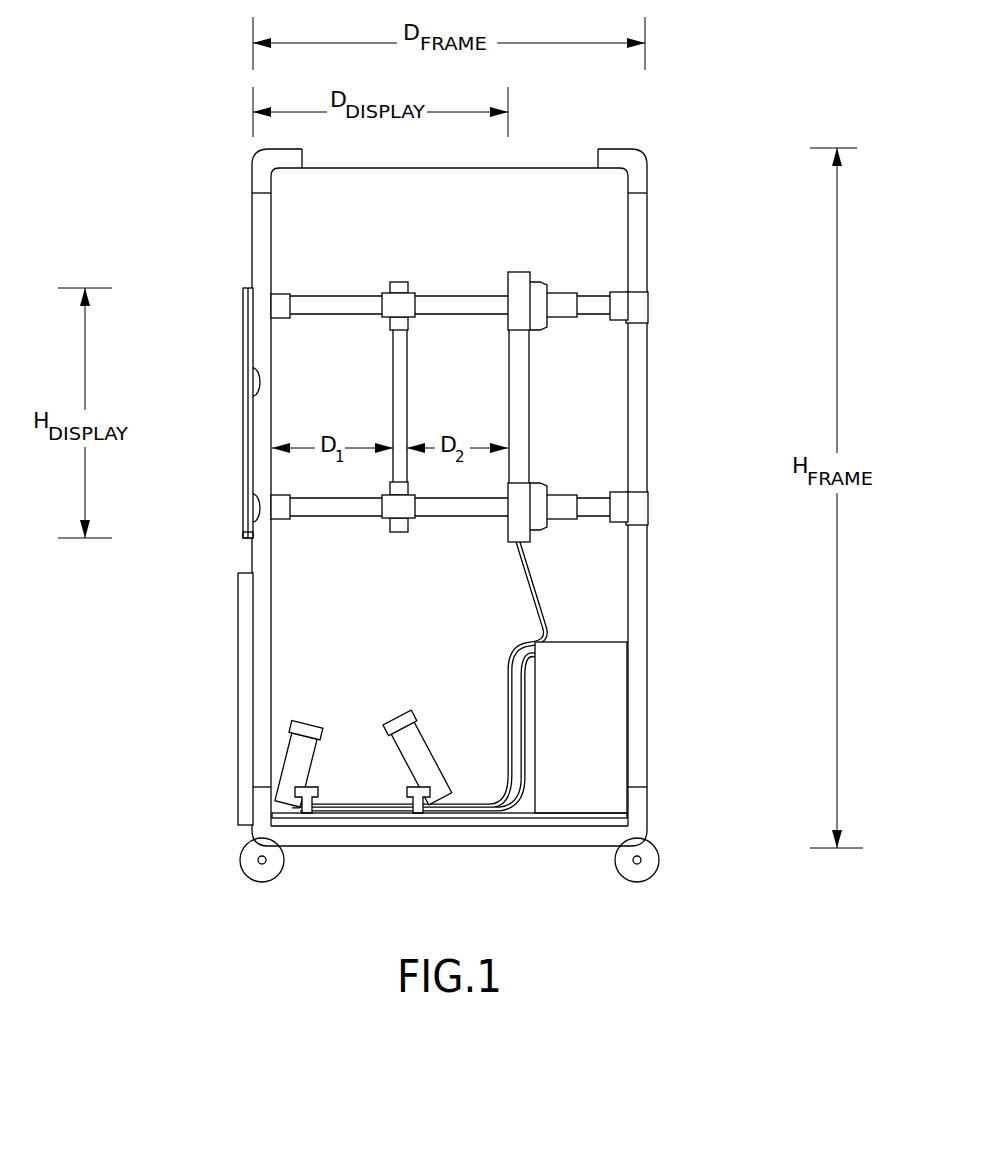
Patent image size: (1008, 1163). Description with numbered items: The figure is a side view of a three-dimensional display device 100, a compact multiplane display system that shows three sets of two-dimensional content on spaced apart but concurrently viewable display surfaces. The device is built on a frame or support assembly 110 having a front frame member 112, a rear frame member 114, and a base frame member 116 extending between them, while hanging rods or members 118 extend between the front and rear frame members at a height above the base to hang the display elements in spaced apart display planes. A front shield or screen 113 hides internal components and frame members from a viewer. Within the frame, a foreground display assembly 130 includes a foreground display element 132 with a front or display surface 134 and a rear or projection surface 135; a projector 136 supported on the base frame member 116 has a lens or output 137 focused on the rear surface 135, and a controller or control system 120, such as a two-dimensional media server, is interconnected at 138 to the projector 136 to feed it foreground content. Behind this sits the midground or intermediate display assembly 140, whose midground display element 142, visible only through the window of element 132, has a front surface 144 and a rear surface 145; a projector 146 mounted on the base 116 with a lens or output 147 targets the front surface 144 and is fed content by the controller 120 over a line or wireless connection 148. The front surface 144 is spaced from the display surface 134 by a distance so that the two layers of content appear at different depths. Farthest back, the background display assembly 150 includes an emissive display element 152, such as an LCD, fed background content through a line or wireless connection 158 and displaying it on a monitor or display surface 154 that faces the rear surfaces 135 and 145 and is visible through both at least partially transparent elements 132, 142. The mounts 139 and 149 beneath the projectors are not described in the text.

The 3D display device 100 is at (705, 107).
The frame or support assembly 110 is at (538, 150).
The front frame member 112 is at (252, 240).
The front shield or screen 113 is at (240, 770).
The rear frame member 114 is at (637, 237).
The base frame member 116 is at (583, 837).
The hanging rods or members 118 is at (592, 318).
The controller or control system 120 is at (585, 642).
The foreground display assembly 130 is at (237, 280).
The foreground display element 132 is at (250, 540).
The front or display surface 134 is at (247, 472).
The rear or projection surface 135 is at (250, 370).
The projector 136 is at (425, 732).
The lens or output 137 is at (403, 710).
The interconnection 138 is at (483, 800).
The second speaker mount 139 is at (407, 793).
The midground or intermediate display assembly 140 is at (438, 250).
The midground display element 142 is at (398, 277).
The front surface 144 is at (393, 410).
The rear surface 145 is at (407, 365).
The projector 146 is at (325, 740).
The lens or output 147 is at (317, 713).
The line or wireless connection 148 is at (337, 815).
The first speaker mount 149 is at (325, 780).
The background display assembly 150 is at (560, 250).
The display element 152 is at (520, 268).
The monitor or display surface 154 is at (508, 413).
The line or wireless connection 158 is at (532, 575).